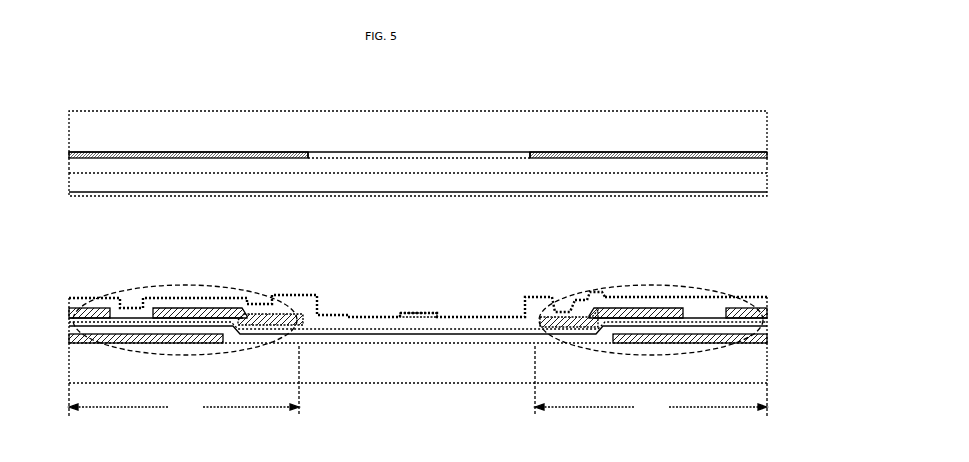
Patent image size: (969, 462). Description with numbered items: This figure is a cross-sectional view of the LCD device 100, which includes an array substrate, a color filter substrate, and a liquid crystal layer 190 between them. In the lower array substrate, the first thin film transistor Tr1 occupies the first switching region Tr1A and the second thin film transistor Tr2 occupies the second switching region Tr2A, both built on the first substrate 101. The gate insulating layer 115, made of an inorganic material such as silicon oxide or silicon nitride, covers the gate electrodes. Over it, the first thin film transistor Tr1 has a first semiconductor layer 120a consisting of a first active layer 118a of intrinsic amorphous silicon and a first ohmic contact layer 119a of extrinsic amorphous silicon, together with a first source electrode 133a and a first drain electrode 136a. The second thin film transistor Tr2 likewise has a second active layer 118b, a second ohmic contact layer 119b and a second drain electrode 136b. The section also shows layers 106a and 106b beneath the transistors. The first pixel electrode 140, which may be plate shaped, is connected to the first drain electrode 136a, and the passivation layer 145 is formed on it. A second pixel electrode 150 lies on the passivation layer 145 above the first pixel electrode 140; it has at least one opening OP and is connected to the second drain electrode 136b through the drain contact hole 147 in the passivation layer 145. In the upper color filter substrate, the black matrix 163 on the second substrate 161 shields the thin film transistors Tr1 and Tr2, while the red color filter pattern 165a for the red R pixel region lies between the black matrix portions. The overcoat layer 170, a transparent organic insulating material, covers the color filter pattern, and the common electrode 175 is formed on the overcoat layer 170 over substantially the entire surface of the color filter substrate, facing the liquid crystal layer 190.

The LCD device 100 is at (718, 88).
The first substrate 101 is at (766, 378).
The first active layer 106a is at (145, 344).
The second active layer 106b is at (683, 344).
The gate insulating layer 115 is at (362, 322).
The first active layer 118a is at (246, 331).
The second active layer 118b is at (562, 331).
The first ohmic contact layer 119a is at (283, 331).
The second ohmic contact layer 119b is at (596, 331).
The first semiconductor layer 120a is at (255, 339).
The first source electrode 133a is at (92, 311).
The first drain electrode 136a is at (180, 311).
The second drain electrode 136b is at (650, 311).
The first pixel electrode 140 is at (424, 335).
The passivation layer 145 is at (458, 344).
The drain contact hole 147 is at (566, 294).
The second pixel electrode 150 is at (288, 300).
The second substrate 161 is at (762, 132).
The black matrix 163 is at (184, 151).
The red color filter pattern 165a is at (345, 158).
The overcoat layer 170 is at (452, 185).
The common electrode 175 is at (493, 195).
The liquid crystal layer 190 is at (100, 227).
The red R is at (411, 161).
The opening OP is at (375, 298).
The first thin film transistor Tr1 is at (108, 352).
The second thin film transistor Tr2 is at (704, 355).
The first switching region Tr1A is at (184, 381).
The second switching region Tr2A is at (651, 381).